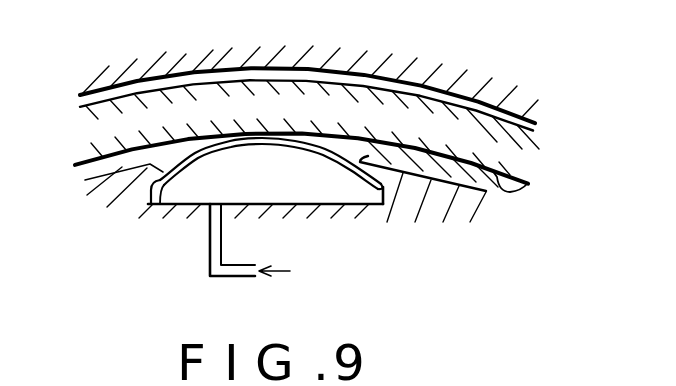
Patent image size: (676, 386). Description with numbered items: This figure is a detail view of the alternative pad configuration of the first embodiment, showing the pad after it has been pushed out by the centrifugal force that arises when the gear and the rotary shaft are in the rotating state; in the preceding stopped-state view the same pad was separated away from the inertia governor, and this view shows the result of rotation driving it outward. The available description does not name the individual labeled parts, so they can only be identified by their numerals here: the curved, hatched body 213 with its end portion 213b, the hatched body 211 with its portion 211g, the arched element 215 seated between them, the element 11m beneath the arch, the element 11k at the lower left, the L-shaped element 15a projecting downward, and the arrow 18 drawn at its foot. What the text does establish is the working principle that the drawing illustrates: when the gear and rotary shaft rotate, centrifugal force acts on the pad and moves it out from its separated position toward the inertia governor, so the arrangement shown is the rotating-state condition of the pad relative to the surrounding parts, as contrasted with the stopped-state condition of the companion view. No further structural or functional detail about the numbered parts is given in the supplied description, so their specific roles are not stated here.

The leaf spring 215 is at (298, 139).
The cover 213 is at (463, 93).
The engaging lip of cover 213b is at (512, 193).
The frame body 211 is at (433, 208).
The retaining ledge of frame 211g is at (350, 195).
The mounting block portion of housing 11m is at (284, 204).
The housing portion 11k is at (150, 187).
The L-shaped bracket 15a is at (195, 204).
The insertion direction arrow 18 is at (221, 279).